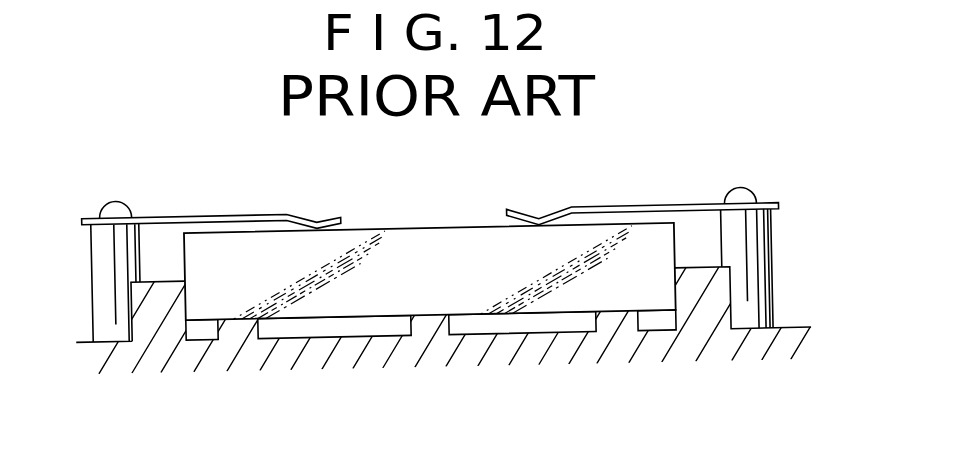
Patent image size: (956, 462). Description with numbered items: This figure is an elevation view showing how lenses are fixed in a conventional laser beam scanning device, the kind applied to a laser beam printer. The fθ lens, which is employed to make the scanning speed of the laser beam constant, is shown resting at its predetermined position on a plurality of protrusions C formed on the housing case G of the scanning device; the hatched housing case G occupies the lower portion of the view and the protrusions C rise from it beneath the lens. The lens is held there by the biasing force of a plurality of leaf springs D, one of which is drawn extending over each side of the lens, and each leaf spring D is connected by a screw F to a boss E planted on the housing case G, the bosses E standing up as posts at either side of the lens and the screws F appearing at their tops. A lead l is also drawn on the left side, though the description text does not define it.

The protrusion C is at (708, 382).
The leaf spring D is at (604, 210).
The boss E is at (766, 250).
The screw F is at (740, 193).
The housing case G is at (500, 349).
The lead l is at (228, 229).